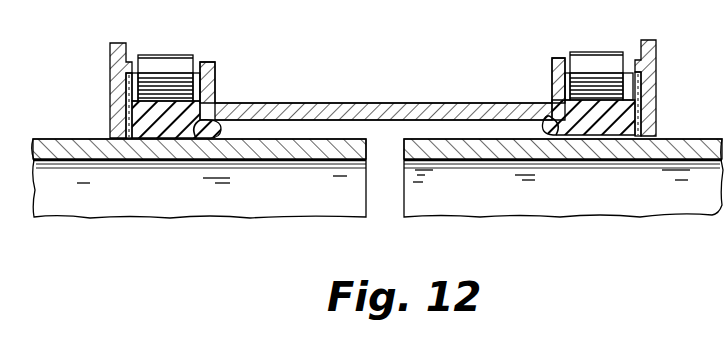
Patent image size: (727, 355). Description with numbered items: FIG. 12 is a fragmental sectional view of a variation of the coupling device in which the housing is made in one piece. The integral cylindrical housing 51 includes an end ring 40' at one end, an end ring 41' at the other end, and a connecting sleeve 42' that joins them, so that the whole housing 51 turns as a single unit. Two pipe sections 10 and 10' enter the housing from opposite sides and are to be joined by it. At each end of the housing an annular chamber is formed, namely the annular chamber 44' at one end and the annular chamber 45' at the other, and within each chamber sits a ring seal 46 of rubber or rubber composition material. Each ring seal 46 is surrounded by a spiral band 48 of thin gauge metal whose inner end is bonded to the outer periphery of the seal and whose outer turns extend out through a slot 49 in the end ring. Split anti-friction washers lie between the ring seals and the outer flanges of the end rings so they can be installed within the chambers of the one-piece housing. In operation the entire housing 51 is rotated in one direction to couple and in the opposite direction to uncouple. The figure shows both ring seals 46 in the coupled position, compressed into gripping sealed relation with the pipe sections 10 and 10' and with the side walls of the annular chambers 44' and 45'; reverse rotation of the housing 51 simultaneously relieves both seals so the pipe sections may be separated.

The pipe section 10 is at (199, 178).
The pipe section 10' is at (563, 178).
The end ring 40' is at (91, 87).
The end ring 41' is at (676, 75).
The connecting sleeve 42' is at (382, 89).
The annular chamber 44' is at (234, 68).
The annular chamber 45' is at (565, 78).
The ring seal 46 is at (173, 133).
The spiral band 48 is at (604, 52).
The slot 49 is at (578, 64).
The cylindrical housing 51 is at (447, 98).